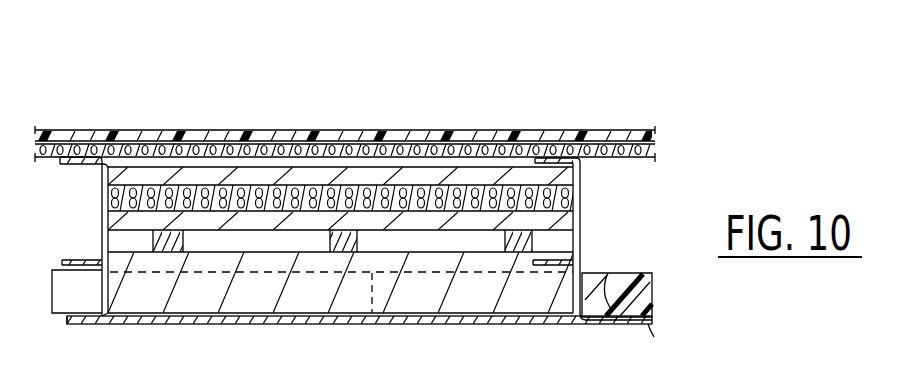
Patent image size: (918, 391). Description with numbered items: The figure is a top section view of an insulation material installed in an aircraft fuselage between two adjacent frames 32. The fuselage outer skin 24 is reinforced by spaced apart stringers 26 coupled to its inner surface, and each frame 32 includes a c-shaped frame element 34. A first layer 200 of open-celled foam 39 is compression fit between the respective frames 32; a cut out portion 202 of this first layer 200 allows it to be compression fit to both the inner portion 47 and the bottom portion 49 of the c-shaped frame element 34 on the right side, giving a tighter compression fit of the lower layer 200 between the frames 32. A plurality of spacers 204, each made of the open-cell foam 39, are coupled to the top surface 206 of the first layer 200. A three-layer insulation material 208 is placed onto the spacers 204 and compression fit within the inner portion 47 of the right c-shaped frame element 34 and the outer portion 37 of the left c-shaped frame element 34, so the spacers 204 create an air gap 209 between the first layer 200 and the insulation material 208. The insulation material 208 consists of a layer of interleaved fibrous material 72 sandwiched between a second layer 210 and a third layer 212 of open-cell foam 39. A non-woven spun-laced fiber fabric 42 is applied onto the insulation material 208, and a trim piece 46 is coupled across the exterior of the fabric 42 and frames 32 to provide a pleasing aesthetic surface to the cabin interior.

The outer skin 24 is at (93, 323).
The stringers 26 is at (63, 289).
The frame 32 is at (69, 234).
The c-shaped frame element 34 is at (102, 172).
The outer portion 37 is at (112, 167).
The open-celled foam 39 is at (553, 177).
The non-woven spun-laced fiber fabric 42 is at (207, 145).
The trim piece 46 is at (150, 129).
The inner portion 47 is at (560, 262).
The bottom portion 49 is at (542, 266).
The interleaved fibrous material 72 is at (110, 200).
The first layer 200 is at (252, 318).
The cut out portion 202 is at (551, 268).
The spacers 204 is at (348, 243).
The top surface 206 is at (425, 250).
The three-layer insulation material 208 is at (598, 174).
The air gap 209 is at (262, 242).
The second layer 210 is at (135, 229).
The third layer 212 is at (240, 178).